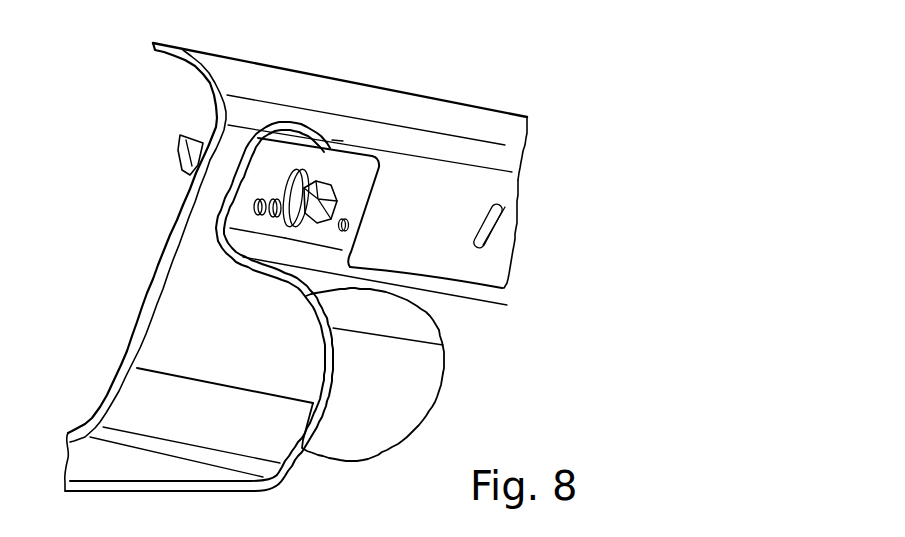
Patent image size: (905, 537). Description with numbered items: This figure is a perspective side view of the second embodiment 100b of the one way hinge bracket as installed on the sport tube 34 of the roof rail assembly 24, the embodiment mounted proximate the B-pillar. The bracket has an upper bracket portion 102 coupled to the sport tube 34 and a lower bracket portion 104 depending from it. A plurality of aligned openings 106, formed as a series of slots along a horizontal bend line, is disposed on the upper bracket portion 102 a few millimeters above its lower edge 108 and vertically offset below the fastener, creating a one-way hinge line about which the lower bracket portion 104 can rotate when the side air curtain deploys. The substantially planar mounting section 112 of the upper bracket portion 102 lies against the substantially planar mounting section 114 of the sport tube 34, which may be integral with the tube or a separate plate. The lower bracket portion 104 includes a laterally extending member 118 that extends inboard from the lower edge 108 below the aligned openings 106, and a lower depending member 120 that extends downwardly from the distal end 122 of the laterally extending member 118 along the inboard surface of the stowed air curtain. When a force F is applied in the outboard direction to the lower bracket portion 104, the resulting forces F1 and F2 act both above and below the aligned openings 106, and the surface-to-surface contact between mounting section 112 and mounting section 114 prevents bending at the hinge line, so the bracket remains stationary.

The roof rail assembly 24 is at (468, 123).
The sport tube 34 is at (500, 163).
The upper bracket portion 102 is at (343, 163).
The lower bracket portion 104 is at (423, 368).
The plurality of aligned openings 106 is at (343, 227).
The lower edge 108 is at (213, 235).
The mounting section 112 is at (137, 367).
The mounting section 114 is at (332, 140).
The laterally extending member 118 is at (400, 291).
The lower depending member 120 is at (387, 430).
The second embodiment of the one way hinge bracket 100b is at (347, 447).
The distal end 122 is at (323, 316).
The force F is at (413, 392).
The resulting force F1 is at (252, 223).
The resulting force F2 is at (268, 162).